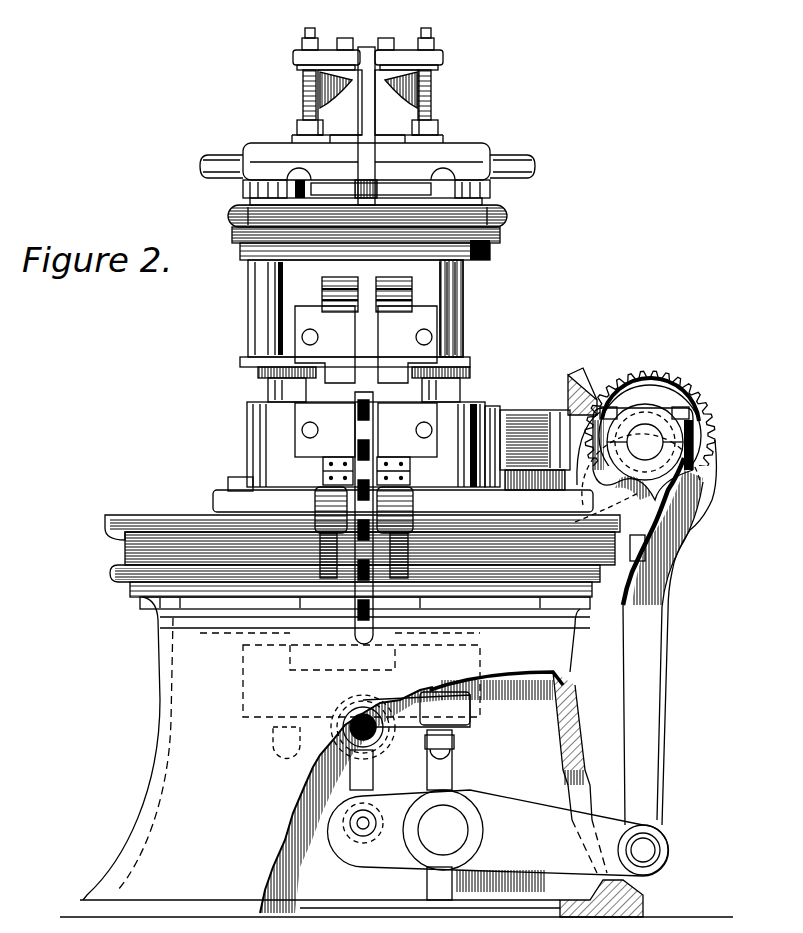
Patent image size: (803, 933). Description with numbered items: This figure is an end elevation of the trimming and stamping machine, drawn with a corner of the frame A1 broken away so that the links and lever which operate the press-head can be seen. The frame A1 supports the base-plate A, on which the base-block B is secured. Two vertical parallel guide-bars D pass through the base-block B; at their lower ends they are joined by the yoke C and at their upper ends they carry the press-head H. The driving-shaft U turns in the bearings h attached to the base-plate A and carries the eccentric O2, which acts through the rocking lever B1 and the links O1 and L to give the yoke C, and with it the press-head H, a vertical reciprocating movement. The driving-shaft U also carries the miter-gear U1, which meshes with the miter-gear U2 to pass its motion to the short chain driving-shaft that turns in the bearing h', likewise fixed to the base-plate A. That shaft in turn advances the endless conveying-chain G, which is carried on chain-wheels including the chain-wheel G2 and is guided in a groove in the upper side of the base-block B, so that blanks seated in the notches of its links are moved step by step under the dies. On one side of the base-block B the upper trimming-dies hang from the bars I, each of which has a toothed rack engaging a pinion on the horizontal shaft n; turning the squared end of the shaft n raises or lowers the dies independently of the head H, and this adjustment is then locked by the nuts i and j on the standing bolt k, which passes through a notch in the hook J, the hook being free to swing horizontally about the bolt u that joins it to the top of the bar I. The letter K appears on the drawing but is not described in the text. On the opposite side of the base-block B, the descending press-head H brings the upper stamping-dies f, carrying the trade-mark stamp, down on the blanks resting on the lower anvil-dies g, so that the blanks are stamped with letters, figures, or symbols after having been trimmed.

The standing bolt k is at (310, 29).
The hook J is at (323, 56).
The bolt u is at (365, 33).
The nut j is at (300, 56).
The nut i is at (300, 72).
The bar I is at (367, 106).
The cross bar K is at (366, 174).
The horizontal shaft n is at (200, 166).
The press-head H is at (355, 313).
The upper stamping-die f is at (366, 344).
The guide-bar D is at (262, 380).
The endless conveying-chain G is at (364, 508).
The bearing h' is at (535, 438).
The lower anvil-die g is at (366, 430).
The base-block B is at (381, 471).
The miter-gear U2 is at (580, 375).
The miter-gear U1 is at (662, 377).
The driving-shaft U is at (643, 442).
The bearing h is at (637, 468).
The eccentric O2 is at (681, 526).
The base-plate A is at (362, 550).
The frame A1 is at (396, 757).
The chain-wheel G2 is at (355, 622).
The link O1 is at (643, 740).
The yoke C is at (400, 725).
The link L is at (374, 768).
The rocking lever B1 is at (461, 853).